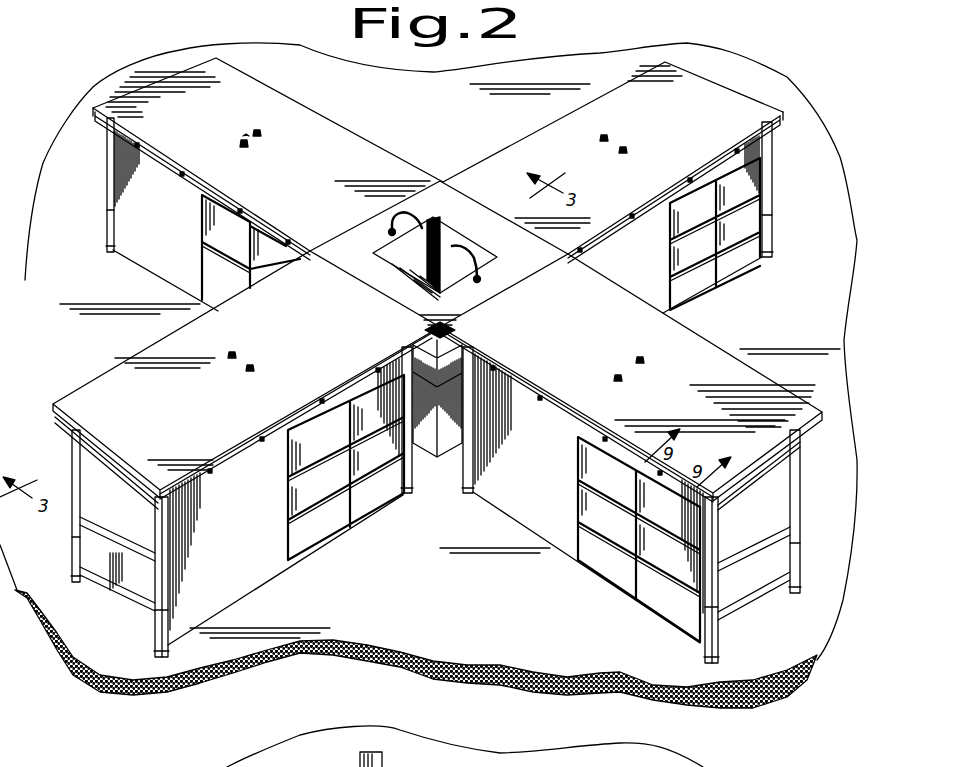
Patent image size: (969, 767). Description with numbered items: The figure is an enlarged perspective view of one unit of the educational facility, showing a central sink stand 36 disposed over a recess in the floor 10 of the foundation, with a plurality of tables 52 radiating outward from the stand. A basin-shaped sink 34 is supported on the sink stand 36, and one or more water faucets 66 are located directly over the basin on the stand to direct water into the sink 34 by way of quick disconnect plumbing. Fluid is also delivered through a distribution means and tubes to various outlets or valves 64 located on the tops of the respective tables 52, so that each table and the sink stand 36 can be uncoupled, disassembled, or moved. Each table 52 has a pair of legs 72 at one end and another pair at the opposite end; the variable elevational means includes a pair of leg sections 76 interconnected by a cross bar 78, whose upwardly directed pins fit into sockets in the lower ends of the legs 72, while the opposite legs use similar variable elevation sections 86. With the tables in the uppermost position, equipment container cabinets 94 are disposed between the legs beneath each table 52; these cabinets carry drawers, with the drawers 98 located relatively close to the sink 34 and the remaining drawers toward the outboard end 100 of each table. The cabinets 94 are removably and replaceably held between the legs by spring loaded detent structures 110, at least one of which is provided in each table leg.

The floor 10 is at (753, 700).
The sink 34 is at (441, 250).
The sink stand 36 is at (423, 440).
The table 52 is at (313, 186).
The outlet or valve 64 is at (256, 130).
The water faucet 66 is at (410, 220).
The leg 72 is at (107, 184).
The leg section 76 is at (107, 236).
The cross bar 78 is at (104, 590).
The variable elevation section 86 is at (407, 494).
The equipment container cabinet 94 is at (153, 267).
The drawer 98 is at (367, 512).
The outboard end 100 is at (122, 457).
The spring loaded detent structure 110 is at (182, 170).